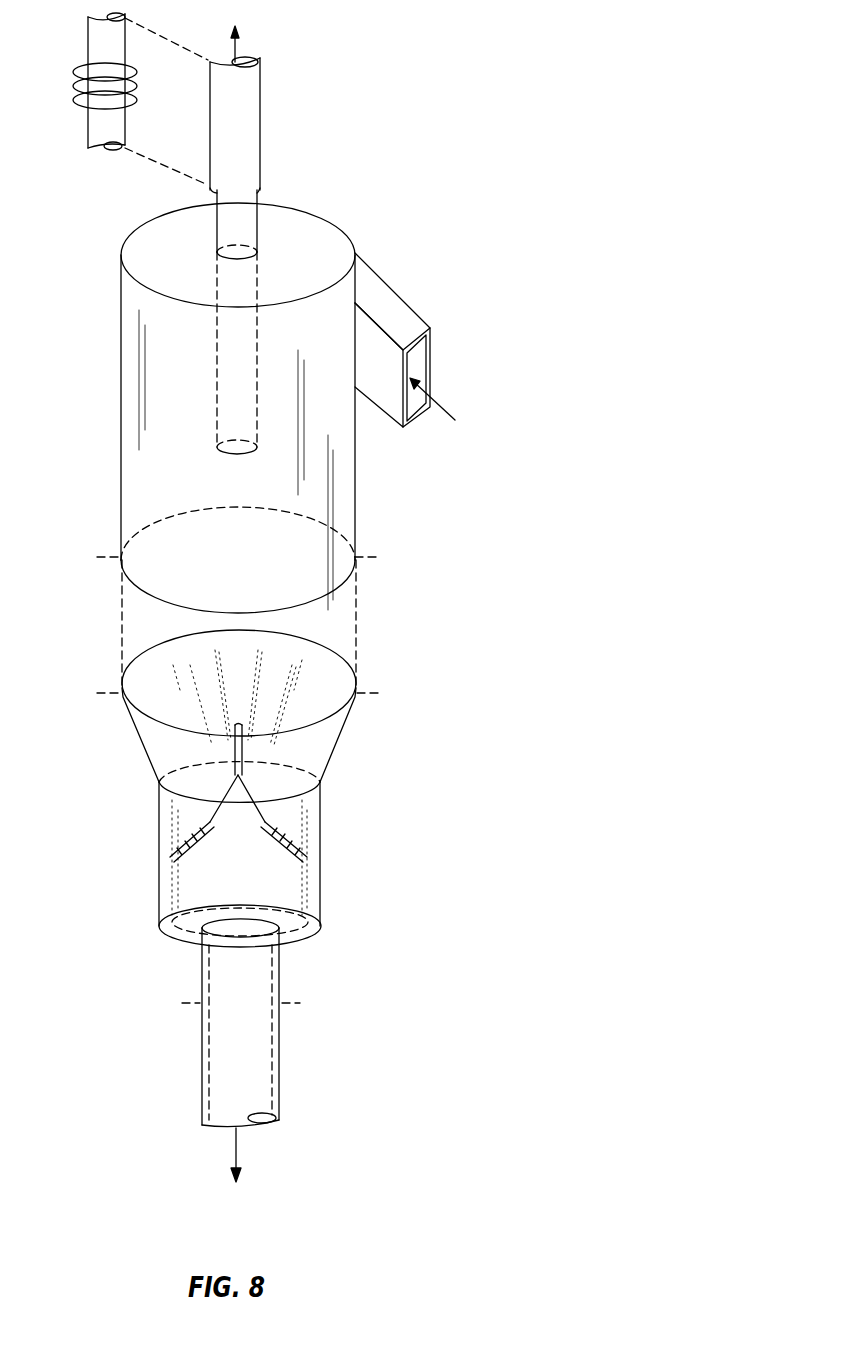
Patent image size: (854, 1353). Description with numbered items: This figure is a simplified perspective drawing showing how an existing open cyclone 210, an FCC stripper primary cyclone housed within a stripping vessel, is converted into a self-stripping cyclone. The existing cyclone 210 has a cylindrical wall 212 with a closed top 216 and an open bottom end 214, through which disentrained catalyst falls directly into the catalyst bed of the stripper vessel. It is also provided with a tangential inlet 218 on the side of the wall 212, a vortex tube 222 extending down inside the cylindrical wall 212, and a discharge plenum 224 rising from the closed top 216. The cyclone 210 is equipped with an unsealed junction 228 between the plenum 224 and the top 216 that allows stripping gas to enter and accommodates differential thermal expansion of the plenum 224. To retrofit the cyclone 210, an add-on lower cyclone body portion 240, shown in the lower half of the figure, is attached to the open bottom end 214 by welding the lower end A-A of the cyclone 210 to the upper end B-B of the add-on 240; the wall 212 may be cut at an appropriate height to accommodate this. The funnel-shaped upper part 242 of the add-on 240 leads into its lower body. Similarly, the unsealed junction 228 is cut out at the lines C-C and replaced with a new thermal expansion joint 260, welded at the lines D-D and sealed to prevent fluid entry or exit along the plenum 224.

The open cyclone 210 is at (400, 198).
The cylindrical wall 212 is at (356, 496).
The open bottom end 214 is at (143, 588).
The closed top 216 is at (160, 218).
The tangential inlet 218 is at (396, 306).
The vortex tube 222 is at (237, 456).
The discharge plenum 224 is at (263, 122).
The unsealed junction 228 is at (263, 190).
The add-on lower cyclone body portion 240 is at (400, 748).
The funnel 242 is at (325, 750).
The thermal expansion joint 260 is at (137, 86).